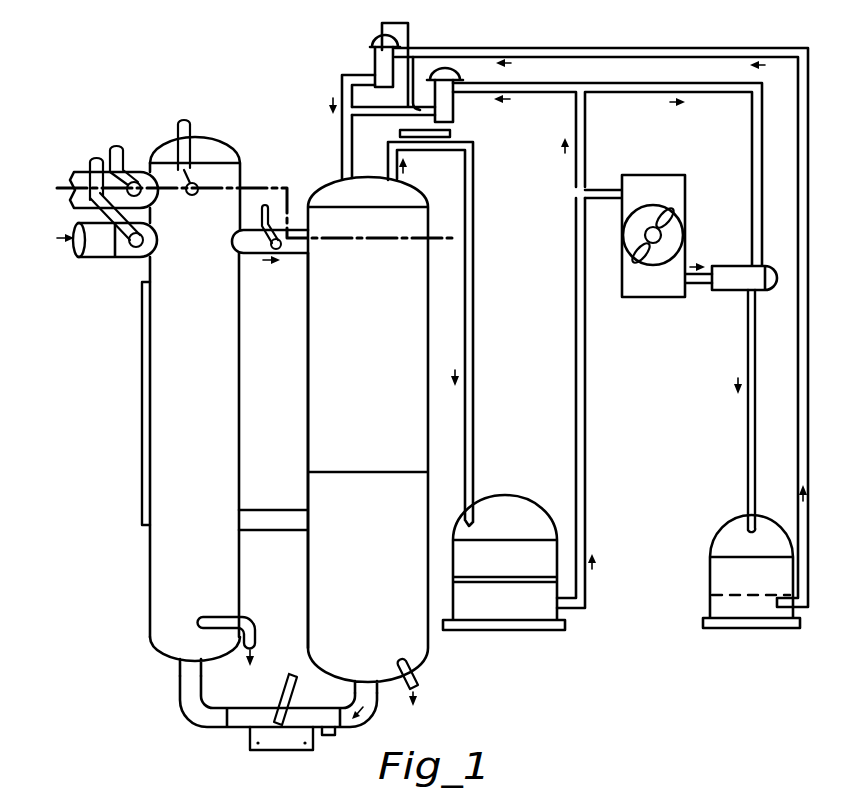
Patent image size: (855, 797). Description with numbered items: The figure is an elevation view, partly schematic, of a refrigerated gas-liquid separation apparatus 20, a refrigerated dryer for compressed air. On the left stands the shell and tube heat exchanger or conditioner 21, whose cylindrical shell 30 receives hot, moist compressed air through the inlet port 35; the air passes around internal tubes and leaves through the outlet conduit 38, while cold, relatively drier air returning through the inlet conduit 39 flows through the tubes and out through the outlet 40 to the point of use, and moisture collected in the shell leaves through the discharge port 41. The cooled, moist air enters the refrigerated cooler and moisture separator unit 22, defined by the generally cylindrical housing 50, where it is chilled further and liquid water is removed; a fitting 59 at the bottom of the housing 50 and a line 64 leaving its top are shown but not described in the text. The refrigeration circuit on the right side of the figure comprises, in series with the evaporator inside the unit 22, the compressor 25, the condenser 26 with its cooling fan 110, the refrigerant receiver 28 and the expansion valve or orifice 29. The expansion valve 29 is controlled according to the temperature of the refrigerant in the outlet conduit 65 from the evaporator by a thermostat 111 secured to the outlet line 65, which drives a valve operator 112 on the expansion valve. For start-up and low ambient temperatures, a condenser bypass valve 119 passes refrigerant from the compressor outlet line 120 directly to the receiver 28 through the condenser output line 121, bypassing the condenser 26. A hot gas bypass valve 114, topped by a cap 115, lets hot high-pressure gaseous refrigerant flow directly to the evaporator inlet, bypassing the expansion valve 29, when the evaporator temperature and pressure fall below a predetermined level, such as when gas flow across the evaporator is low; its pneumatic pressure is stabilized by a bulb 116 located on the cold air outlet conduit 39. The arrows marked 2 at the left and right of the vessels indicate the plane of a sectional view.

The section line 2- 2 is at (63, 182).
The refrigerated gas-liquid separation apparatus 20 is at (120, 485).
The shell and tube heat exchanger or conditioner 21 is at (144, 577).
The refrigeration evaporator and moisture separator unit 22 is at (328, 323).
The compressor 25 is at (515, 507).
The condenser 26 is at (676, 188).
The refrigerant collector or receiver 28 is at (711, 571).
The expansion valve or orifice 29 is at (375, 60).
The cylindrical housing or shell 30 is at (207, 398).
The inlet port 35 is at (100, 245).
The outlet conduit 38 is at (251, 243).
The inlet conduit 39 is at (200, 706).
The outlet 40 is at (76, 173).
The discharge port 41 is at (277, 596).
The cylindrical housing 50 is at (386, 398).
The drain outlet 59 is at (420, 679).
The vapor line 64 is at (342, 146).
The outlet conduit 65 is at (387, 165).
The cooling fan 110 is at (639, 201).
The thermostat 111 is at (460, 130).
The valve operator 112 is at (368, 42).
The hot gas bypass valve 114 is at (457, 104).
The valve cap 115 is at (446, 73).
The bulb 116 is at (331, 735).
The condenser bypass valve 119 is at (735, 272).
The compressor outlet line 120 is at (586, 392).
The condenser output line 121 is at (748, 454).